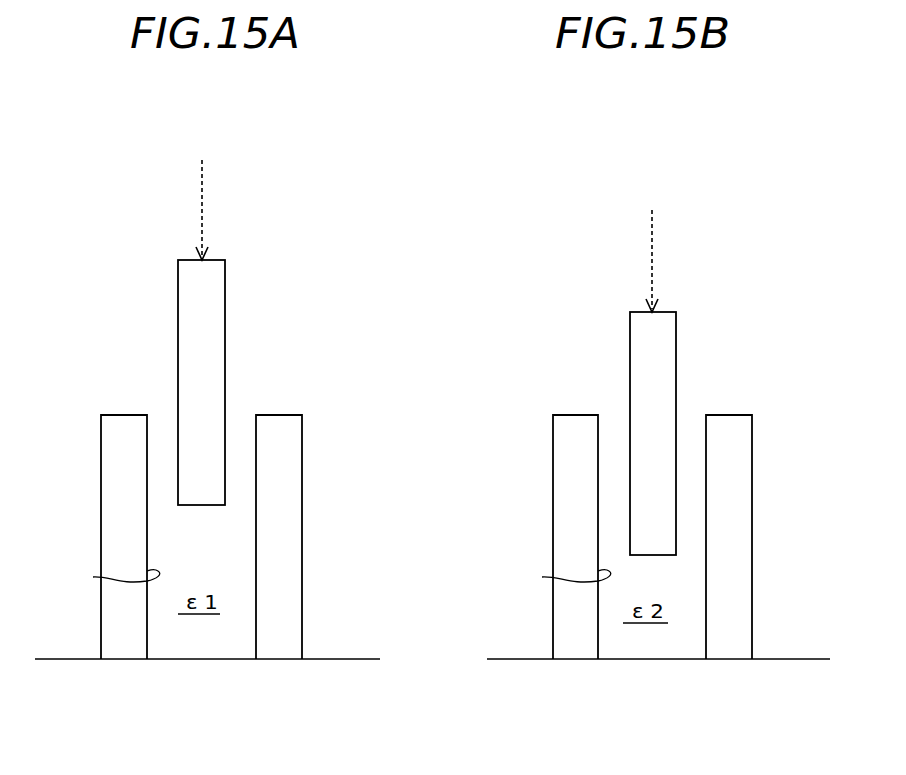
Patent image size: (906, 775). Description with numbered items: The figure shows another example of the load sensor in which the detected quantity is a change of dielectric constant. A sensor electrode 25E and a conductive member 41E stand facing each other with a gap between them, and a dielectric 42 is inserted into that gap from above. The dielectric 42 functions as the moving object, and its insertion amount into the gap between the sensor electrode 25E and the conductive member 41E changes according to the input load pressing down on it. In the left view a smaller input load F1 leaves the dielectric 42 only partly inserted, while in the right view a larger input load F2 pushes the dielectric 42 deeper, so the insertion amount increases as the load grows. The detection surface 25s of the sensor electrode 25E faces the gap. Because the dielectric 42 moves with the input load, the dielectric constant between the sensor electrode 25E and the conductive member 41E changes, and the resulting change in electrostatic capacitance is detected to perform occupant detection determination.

In FIG. 15A, the dielectric 42 is at (178, 260).
In FIG. 15B, the dielectric 42 is at (630, 312).
In FIG. 15A, the sensor electrode 25E is at (101, 415).
In FIG. 15B, the sensor electrode 25E is at (553, 415).
In FIG. 15A, the conductive member 41E is at (302, 415).
In FIG. 15B, the conductive member 41E is at (752, 415).
In FIG. 15A, the detection surface 25s is at (107, 578).
In FIG. 15B, the detection surface 25s is at (557, 578).
In FIG. 15A, the input load F1 is at (216, 210).
In FIG. 15B, the input load F2 is at (666, 261).